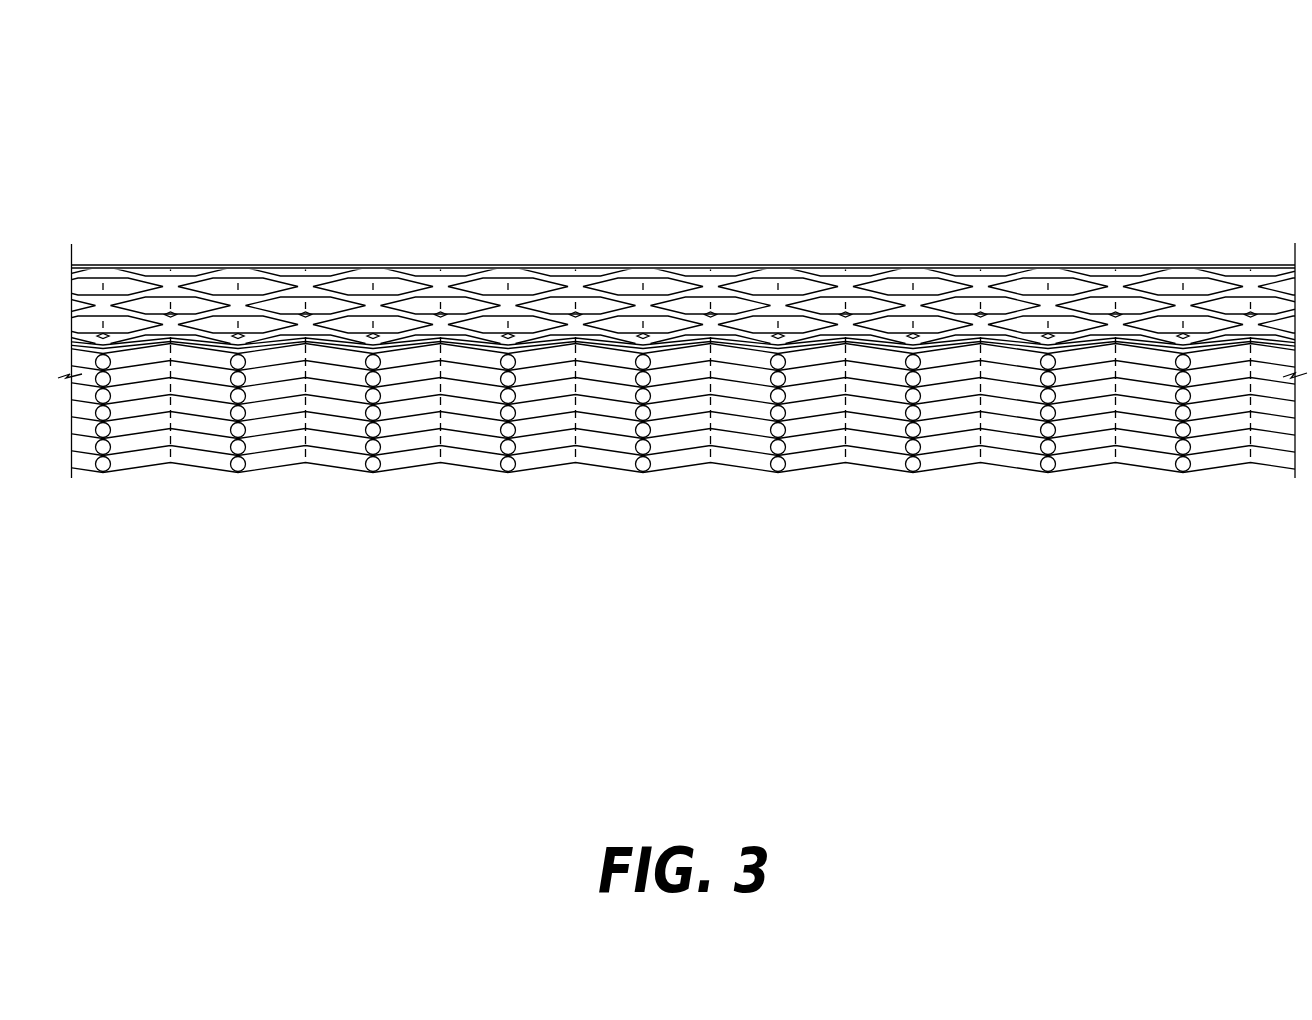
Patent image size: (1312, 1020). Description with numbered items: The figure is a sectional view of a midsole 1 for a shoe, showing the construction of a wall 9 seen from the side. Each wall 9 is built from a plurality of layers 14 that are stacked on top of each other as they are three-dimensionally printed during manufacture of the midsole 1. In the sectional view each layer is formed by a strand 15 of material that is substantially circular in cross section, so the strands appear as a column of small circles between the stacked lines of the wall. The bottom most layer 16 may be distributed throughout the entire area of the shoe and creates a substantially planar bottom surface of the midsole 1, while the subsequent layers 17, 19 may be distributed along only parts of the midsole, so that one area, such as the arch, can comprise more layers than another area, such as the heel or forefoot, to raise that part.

The midsole 1 is at (1042, 121).
The wall 9 is at (270, 427).
The layers 14 is at (395, 390).
The strand 15 is at (238, 400).
The bottom most layer 16 is at (390, 460).
The subsequent layer 17 is at (407, 442).
The subsequent layer 19 is at (412, 423).